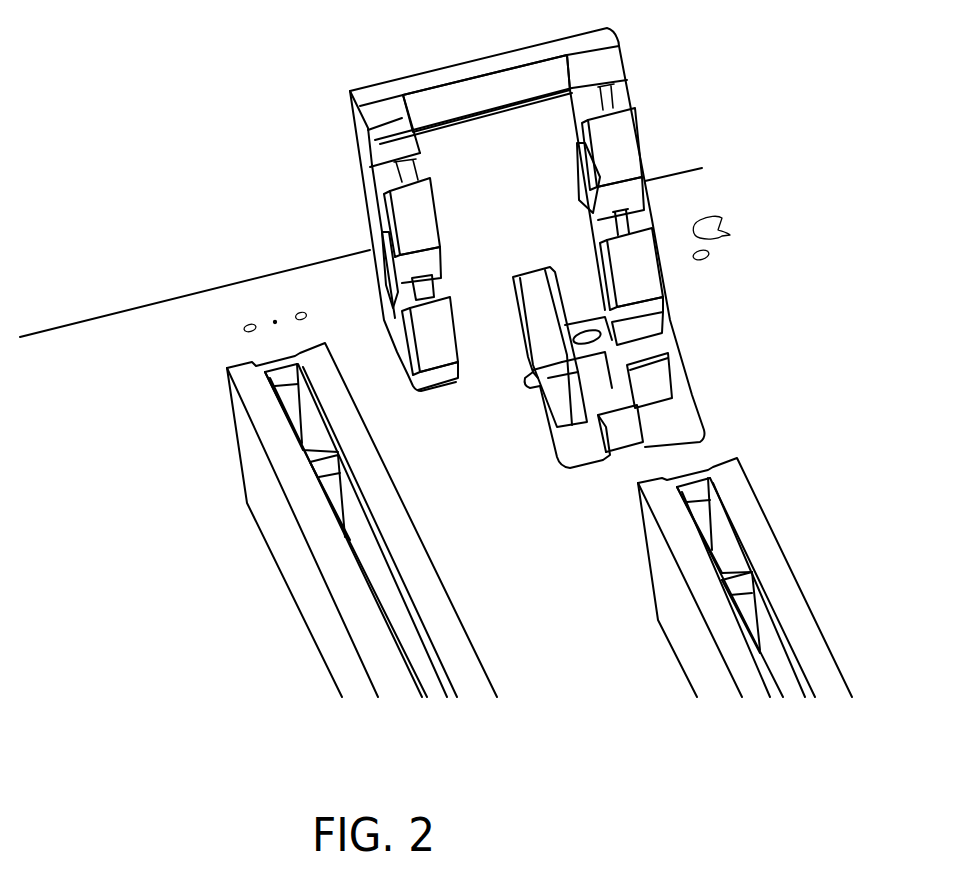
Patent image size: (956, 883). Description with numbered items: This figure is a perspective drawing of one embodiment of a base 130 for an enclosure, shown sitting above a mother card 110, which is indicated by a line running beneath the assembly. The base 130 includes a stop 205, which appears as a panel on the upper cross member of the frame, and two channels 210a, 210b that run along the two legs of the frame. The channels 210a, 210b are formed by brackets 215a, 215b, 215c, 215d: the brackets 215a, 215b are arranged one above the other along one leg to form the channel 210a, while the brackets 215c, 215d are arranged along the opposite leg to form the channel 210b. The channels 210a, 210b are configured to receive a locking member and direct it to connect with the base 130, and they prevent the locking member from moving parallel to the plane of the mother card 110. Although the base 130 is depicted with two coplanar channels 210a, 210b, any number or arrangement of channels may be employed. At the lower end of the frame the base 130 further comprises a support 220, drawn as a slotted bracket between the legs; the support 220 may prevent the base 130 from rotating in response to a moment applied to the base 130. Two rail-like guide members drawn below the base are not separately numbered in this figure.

The mother card 110 is at (124, 311).
The base 130 is at (348, 93).
The stop 205 is at (482, 103).
The channel 210a is at (413, 163).
The channel 210b is at (617, 92).
The bracket 215a is at (412, 223).
The bracket 215b is at (420, 328).
The bracket 215c is at (628, 153).
The bracket 215d is at (633, 268).
The support 220 is at (540, 385).